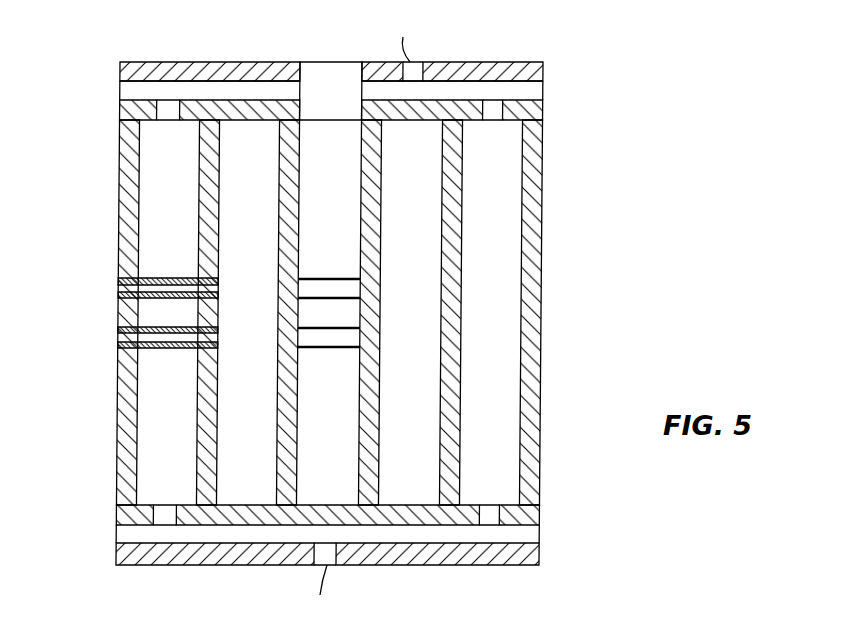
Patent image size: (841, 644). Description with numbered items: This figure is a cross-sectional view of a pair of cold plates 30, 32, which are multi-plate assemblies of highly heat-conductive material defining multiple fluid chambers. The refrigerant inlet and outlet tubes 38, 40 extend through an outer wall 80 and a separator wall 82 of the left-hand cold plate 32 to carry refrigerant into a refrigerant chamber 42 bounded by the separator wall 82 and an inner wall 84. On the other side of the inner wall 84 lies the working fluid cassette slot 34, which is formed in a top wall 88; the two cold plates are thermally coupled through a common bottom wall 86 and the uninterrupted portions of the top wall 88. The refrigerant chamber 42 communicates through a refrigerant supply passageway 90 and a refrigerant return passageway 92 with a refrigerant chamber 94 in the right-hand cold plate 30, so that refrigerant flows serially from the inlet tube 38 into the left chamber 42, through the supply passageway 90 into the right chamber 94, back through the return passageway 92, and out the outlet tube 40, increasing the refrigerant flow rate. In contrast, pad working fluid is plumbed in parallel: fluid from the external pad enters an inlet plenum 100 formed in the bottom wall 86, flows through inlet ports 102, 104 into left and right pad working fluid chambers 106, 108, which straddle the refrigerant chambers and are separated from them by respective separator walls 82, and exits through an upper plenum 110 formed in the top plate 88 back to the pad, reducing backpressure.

The cold plate 30 is at (489, 34).
The cold plate 32 is at (177, 33).
The working fluid cassette slot 34 is at (335, 62).
The refrigerant inlet tube 38 is at (158, 278).
The refrigerant outlet tube 40 is at (160, 349).
The refrigerant chamber 42 is at (240, 386).
The outer wall 80 is at (120, 165).
The separator wall 82 is at (195, 428).
The inner wall 84 is at (280, 237).
The bottom wall 86 is at (118, 510).
The top wall 88 is at (545, 108).
The refrigerant supply passageway 90 is at (330, 277).
The refrigerant return passageway 92 is at (330, 349).
The refrigerant chamber 94 is at (425, 215).
The inlet plenum 100 is at (542, 535).
The inlet port 102 is at (165, 505).
The inlet port 104 is at (490, 510).
The pad working fluid chamber 106 is at (160, 222).
The pad working fluid chamber 108 is at (505, 198).
The upper plenum 110 is at (120, 88).